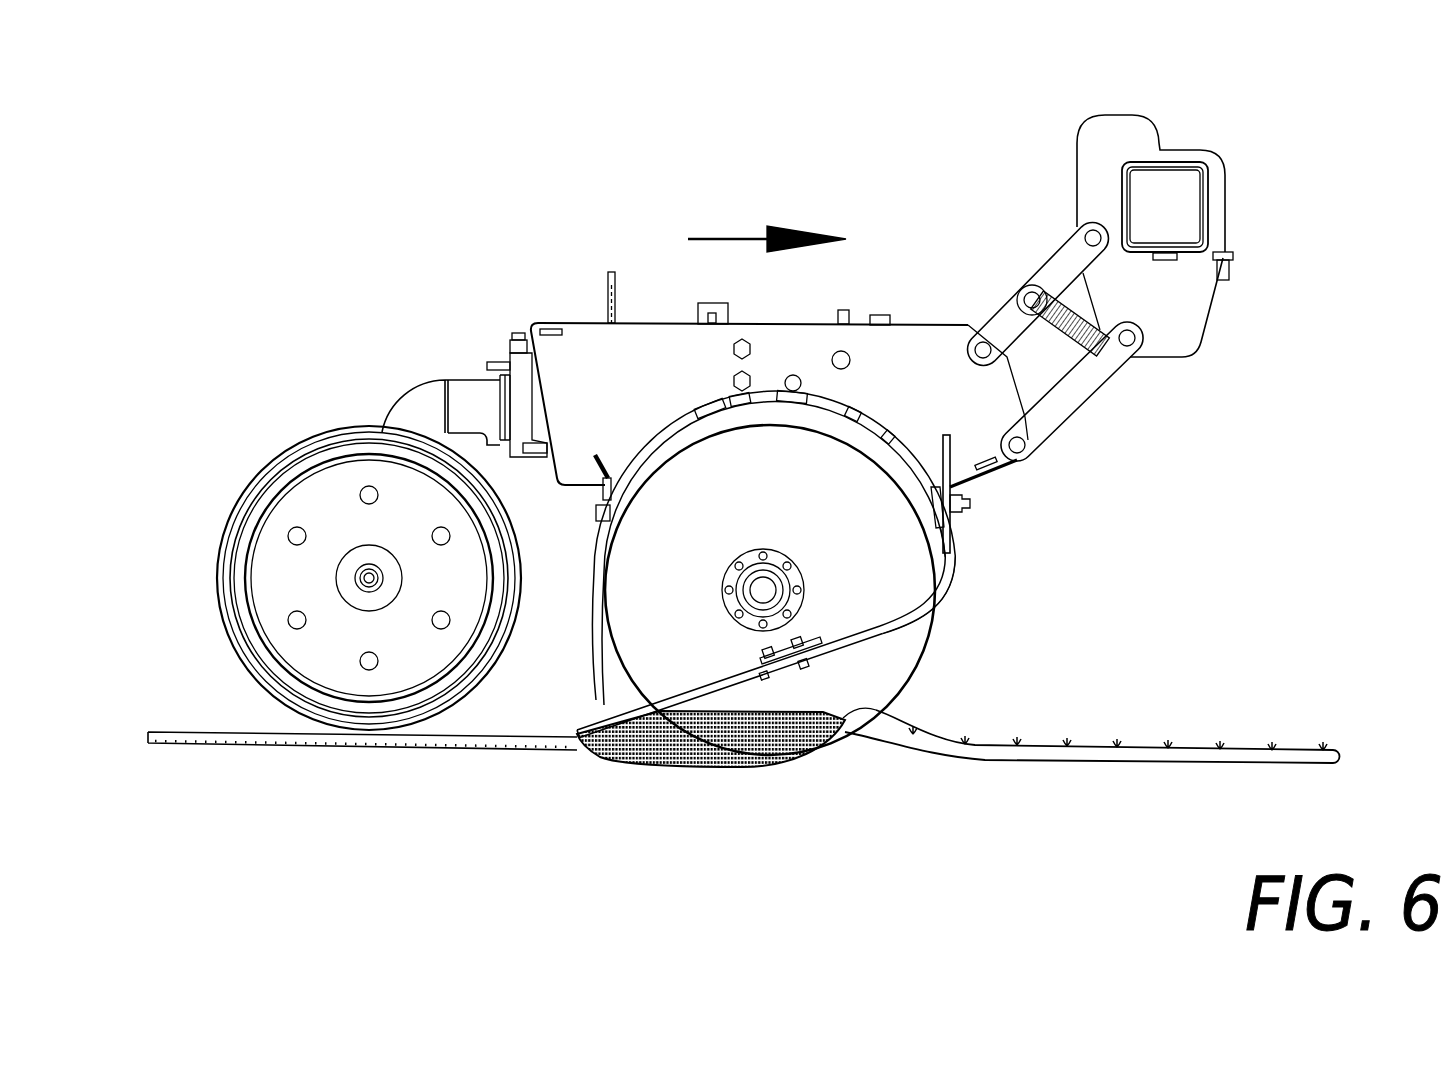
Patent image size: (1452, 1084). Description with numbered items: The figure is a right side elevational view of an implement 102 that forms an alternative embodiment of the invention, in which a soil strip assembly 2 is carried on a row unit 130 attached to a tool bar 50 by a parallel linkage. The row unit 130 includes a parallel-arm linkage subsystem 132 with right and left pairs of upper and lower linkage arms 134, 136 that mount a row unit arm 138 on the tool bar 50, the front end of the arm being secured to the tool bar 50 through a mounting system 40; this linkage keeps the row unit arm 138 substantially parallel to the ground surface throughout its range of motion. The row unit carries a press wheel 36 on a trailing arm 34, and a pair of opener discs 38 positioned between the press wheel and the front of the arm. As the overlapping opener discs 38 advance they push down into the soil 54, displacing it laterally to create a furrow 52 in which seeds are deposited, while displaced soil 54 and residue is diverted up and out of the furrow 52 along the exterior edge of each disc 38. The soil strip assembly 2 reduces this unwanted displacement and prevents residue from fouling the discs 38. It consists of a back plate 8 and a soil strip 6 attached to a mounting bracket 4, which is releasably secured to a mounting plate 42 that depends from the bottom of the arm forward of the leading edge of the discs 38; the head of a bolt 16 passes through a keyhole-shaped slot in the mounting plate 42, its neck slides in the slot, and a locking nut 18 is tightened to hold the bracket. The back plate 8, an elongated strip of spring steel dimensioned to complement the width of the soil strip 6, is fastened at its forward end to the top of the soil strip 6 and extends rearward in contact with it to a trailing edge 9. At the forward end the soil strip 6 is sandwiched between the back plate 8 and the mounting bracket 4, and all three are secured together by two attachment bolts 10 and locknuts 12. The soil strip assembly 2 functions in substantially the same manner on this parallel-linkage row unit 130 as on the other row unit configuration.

The soil strip assembly 2 is at (970, 617).
The mounting bracket 4 is at (947, 578).
The soil strip 6 is at (597, 723).
The back plate 8 is at (723, 673).
The trailing edge 9 is at (627, 703).
The attachment bolt 10 is at (770, 670).
The locknut 12 is at (782, 647).
The bolt 16 is at (937, 510).
The locking nut 18 is at (960, 517).
The trailing arm 34 is at (420, 392).
The press wheel 36 is at (242, 489).
The opener disc 38 is at (920, 662).
The mounting system 40 is at (1243, 140).
The mounting plate 42 is at (937, 540).
The tool bar 50 is at (1163, 175).
The furrow 52 is at (860, 708).
The soil 54 is at (480, 750).
The implement 102 is at (628, 210).
The row unit 130 is at (476, 308).
The parallel-arm linkage subsystem 132 is at (1115, 422).
The upper linkage arm 134 is at (1005, 293).
The lower linkage arm 136 is at (1107, 377).
The row unit arm 138 is at (997, 470).